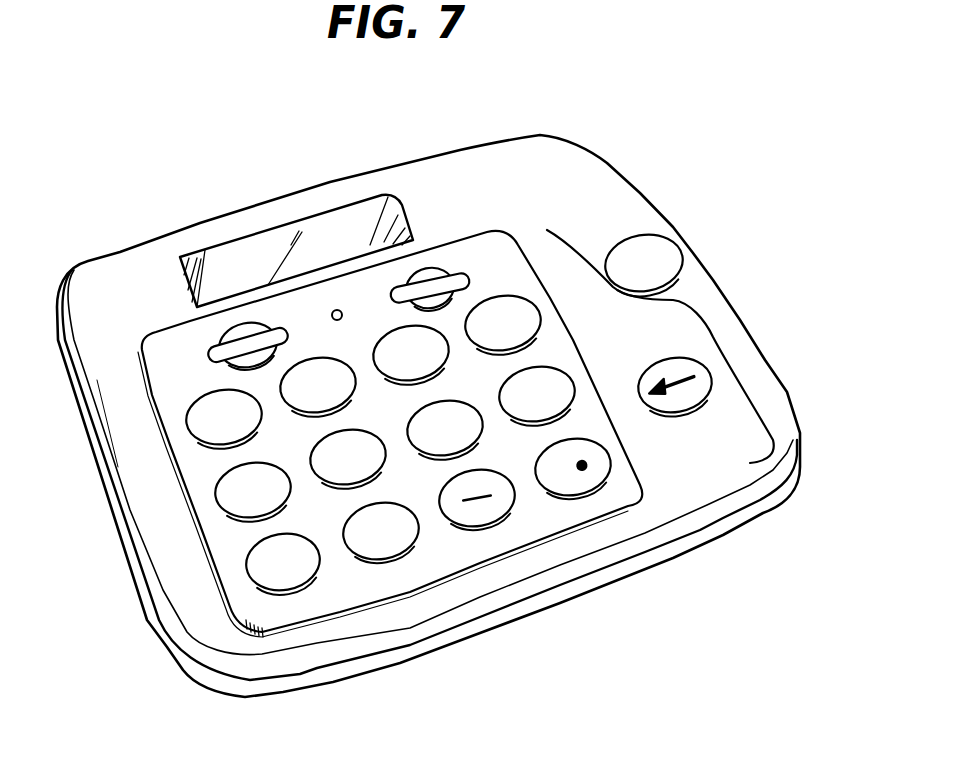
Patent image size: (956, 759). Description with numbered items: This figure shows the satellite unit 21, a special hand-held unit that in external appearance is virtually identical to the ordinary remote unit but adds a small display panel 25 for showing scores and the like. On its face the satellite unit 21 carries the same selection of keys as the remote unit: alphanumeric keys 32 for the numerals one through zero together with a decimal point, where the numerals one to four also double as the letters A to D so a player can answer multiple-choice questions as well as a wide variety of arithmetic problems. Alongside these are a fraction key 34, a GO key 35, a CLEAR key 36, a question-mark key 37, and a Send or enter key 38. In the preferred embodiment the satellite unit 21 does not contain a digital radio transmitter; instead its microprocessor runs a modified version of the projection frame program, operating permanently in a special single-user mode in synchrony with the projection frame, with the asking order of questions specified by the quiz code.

The satellite unit 21 is at (770, 318).
The display panel 25 is at (297, 228).
The alphanumeric keys 32 is at (222, 478).
The fraction key 34 is at (512, 508).
The GO key 35 is at (673, 252).
The CLEAR key 36 is at (215, 350).
The ? key 37 is at (437, 267).
The Send key 38 is at (712, 386).